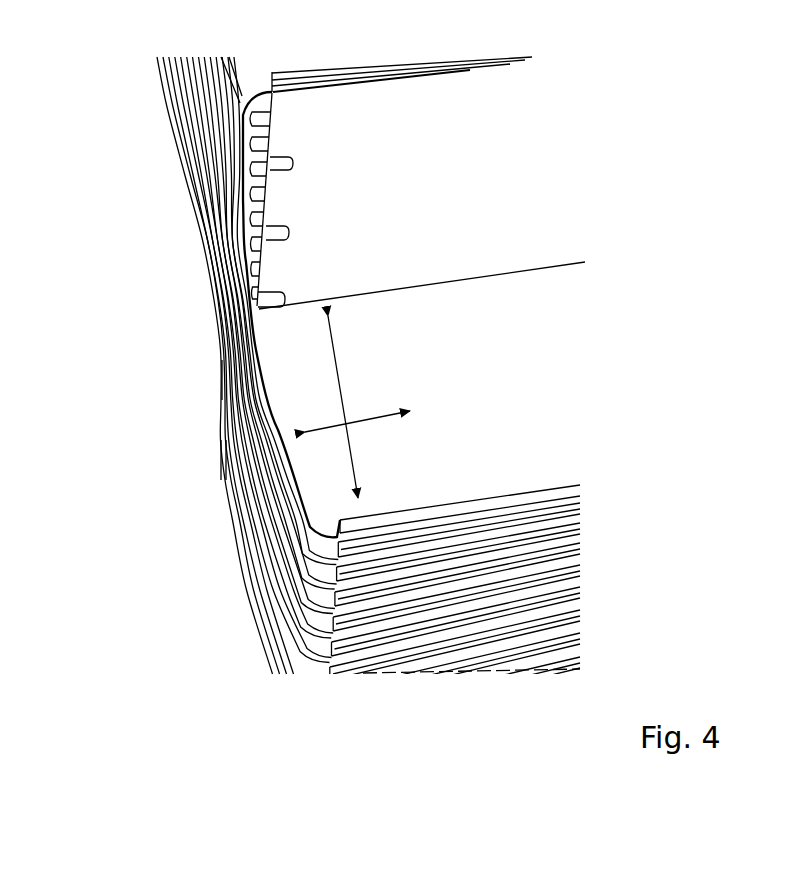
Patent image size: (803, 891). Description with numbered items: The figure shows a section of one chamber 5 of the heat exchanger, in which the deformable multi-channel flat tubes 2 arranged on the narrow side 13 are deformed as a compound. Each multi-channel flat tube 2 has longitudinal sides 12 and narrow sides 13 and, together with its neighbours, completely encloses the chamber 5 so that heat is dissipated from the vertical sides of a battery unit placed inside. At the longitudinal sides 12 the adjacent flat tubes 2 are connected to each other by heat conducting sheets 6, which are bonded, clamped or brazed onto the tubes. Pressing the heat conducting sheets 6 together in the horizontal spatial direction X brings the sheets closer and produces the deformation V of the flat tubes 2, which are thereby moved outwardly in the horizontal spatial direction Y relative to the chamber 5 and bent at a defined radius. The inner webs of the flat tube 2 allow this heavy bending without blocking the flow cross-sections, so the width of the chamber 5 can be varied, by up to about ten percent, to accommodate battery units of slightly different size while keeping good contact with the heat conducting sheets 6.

The multi-channel flat tube 2 is at (200, 127).
The chamber 5 is at (516, 360).
The heat conducting sheet 6 is at (495, 170).
The longitudinal side 12 is at (480, 587).
The narrow side 13 is at (258, 458).
The deformation V is at (221, 377).
The horizontal spatial direction X is at (358, 411).
The horizontal spatial direction Y is at (369, 407).